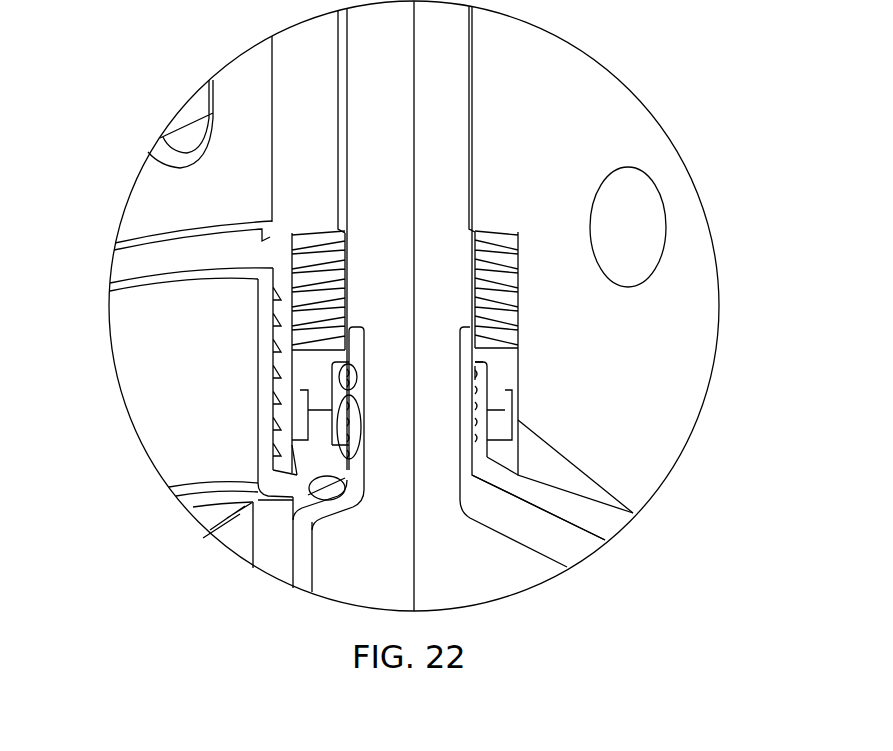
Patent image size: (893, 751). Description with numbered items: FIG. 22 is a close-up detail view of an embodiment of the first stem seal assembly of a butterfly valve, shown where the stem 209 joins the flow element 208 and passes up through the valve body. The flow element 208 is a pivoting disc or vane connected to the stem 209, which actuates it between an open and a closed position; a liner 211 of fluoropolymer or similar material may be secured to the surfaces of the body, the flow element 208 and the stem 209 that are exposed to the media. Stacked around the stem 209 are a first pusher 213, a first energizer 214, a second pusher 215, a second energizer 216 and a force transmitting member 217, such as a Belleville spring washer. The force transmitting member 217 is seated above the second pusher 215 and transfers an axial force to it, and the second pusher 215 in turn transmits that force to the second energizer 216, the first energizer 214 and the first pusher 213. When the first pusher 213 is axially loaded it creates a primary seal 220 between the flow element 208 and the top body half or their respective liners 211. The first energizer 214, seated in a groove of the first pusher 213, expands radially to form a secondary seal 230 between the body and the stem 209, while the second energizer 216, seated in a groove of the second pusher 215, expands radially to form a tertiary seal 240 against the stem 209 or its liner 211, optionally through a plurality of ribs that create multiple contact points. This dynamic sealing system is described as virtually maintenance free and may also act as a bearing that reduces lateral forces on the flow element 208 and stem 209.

The flow element 208 is at (503, 545).
The stem 209 is at (428, 250).
The liner 211 is at (588, 541).
The first pusher 213 is at (510, 453).
The first energizer 214 is at (497, 420).
The second pusher 215 is at (505, 373).
The second energizer 216 is at (478, 373).
The force transmitting member 217 is at (495, 242).
The primary seal 220 is at (298, 498).
The secondary seal 230 is at (340, 432).
The tertiary seal 240 is at (340, 378).